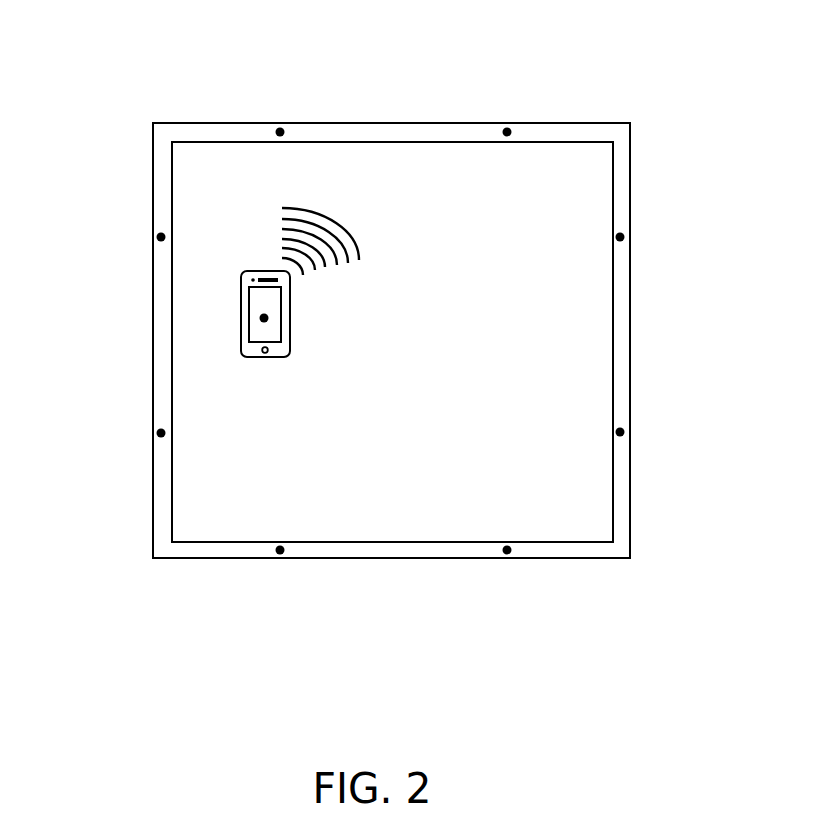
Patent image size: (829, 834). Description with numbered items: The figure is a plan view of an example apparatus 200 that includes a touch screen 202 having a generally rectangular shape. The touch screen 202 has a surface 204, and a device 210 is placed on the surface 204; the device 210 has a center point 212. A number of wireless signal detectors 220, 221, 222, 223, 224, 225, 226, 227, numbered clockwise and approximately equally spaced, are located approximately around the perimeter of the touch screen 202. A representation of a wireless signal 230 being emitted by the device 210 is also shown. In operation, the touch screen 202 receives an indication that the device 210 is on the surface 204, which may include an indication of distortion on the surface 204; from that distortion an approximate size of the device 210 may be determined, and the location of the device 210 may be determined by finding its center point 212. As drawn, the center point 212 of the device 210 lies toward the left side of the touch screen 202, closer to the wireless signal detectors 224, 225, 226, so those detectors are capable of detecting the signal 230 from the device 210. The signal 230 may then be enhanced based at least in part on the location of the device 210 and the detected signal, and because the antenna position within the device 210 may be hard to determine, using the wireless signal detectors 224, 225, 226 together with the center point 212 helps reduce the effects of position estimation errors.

The apparatus 200 is at (612, 43).
The touch screen 202 is at (630, 147).
The surface 204 is at (557, 358).
The device 210 is at (247, 357).
The center point 212 is at (264, 318).
The wireless signal detector 220 is at (620, 237).
The wireless signal detector 221 is at (620, 432).
The wireless signal detector 222 is at (507, 552).
The wireless signal detector 223 is at (280, 552).
The wireless signal detector 224 is at (162, 433).
The wireless signal detector 225 is at (160, 237).
The wireless signal detector 226 is at (280, 132).
The wireless signal detector 227 is at (507, 132).
The wireless signal 230 is at (297, 238).